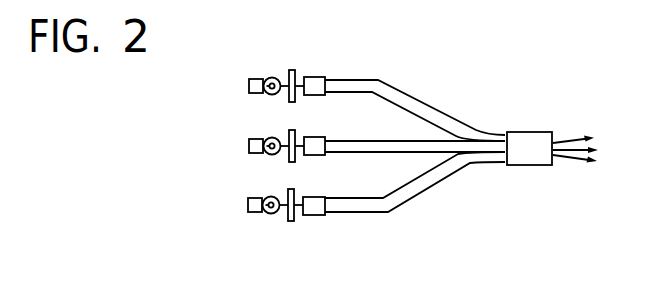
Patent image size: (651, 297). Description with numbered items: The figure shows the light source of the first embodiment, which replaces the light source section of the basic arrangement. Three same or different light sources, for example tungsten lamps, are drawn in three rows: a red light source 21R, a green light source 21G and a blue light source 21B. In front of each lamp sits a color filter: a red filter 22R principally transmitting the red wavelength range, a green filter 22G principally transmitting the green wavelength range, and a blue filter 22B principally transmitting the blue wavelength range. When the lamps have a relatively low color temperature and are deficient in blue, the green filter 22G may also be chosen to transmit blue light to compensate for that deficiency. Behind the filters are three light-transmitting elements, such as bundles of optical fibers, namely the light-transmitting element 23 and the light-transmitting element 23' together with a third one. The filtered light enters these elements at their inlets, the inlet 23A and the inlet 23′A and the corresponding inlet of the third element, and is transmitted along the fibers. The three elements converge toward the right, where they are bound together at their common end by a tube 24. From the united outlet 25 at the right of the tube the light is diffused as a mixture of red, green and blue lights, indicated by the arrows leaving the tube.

The red light source 21R is at (249, 86).
The green light source 21G is at (249, 146).
The blue light source 21B is at (248, 205).
The red filter 22R is at (290, 70).
The green filter 22G is at (290, 130).
The blue filter 22B is at (288, 221).
The inlet 23A is at (306, 78).
The inlet 23′A is at (306, 138).
The light-transmitting element 23 is at (410, 97).
The light-transmitting element 23′ is at (443, 151).
The tube 24 is at (528, 147).
The united outlet 25 is at (553, 138).